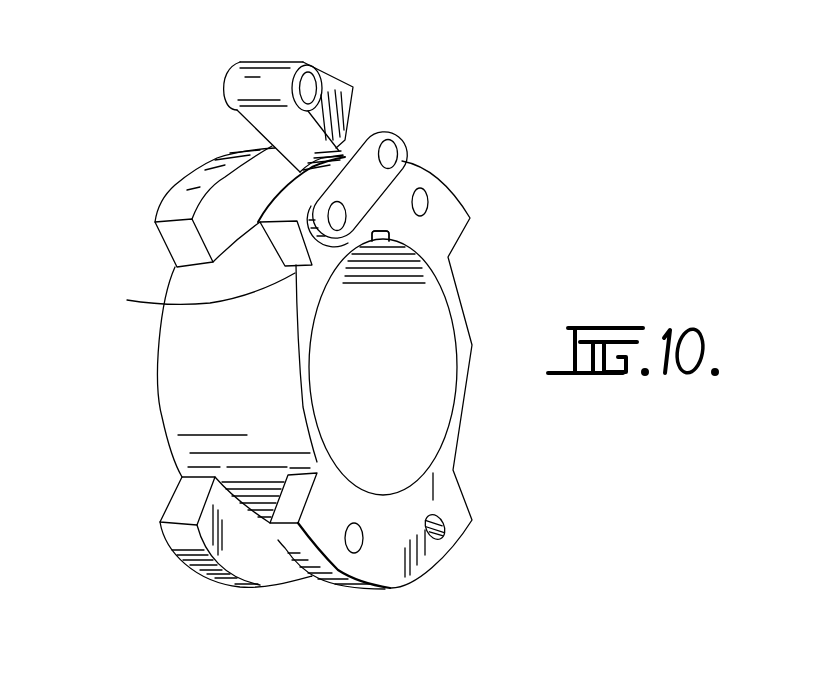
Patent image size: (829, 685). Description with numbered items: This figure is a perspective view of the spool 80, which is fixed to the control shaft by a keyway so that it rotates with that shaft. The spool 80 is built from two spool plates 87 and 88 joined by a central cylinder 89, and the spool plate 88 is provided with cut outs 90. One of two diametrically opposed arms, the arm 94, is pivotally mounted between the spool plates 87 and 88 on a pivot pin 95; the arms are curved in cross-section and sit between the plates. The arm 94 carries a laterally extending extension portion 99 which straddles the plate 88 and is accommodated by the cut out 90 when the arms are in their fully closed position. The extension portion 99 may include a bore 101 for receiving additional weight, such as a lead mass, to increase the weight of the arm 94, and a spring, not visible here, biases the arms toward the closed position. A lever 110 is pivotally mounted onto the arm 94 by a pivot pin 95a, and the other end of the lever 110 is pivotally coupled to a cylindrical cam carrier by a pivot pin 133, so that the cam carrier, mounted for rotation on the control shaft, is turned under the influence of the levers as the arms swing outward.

The spool 80 is at (158, 472).
The spool plate 87 is at (183, 557).
The spool plate 88 is at (424, 553).
The central cylinder 89 is at (210, 362).
The cut out 90 is at (190, 275).
The arm 94 is at (277, 123).
The pivot pin 95 is at (427, 202).
The pivot pin 95a is at (428, 516).
The extension portion 99 is at (341, 90).
The bore 101 is at (308, 86).
The lever 110 is at (346, 200).
The pivot pin 133 is at (389, 152).